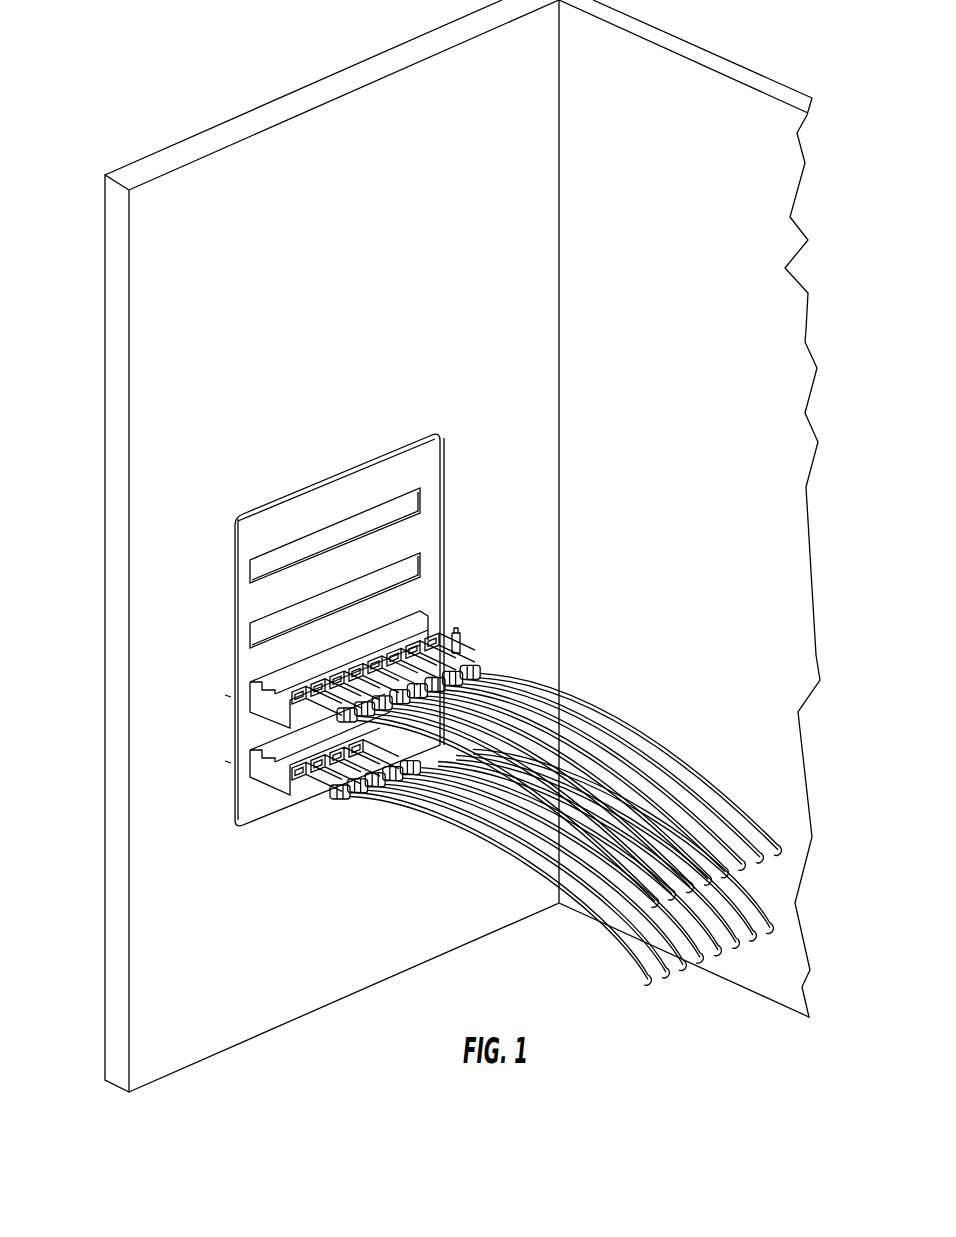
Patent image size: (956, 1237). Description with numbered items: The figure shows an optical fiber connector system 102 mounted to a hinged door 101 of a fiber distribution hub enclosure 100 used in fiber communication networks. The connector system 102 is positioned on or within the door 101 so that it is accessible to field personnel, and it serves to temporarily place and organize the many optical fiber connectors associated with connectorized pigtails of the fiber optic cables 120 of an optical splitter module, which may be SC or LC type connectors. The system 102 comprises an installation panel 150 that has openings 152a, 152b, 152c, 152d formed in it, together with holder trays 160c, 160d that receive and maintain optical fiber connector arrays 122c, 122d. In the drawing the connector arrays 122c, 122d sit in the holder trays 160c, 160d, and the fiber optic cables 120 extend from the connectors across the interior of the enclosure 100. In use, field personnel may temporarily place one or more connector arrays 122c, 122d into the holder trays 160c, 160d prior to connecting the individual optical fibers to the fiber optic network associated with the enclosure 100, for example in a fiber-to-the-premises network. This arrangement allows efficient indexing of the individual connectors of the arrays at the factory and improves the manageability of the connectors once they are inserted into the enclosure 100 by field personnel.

The fiber distribution hub enclosure 100 is at (436, 546).
The hinged door 101 is at (103, 228).
The optical fiber connector system 102 is at (464, 633).
The fiber optic cables 120 is at (568, 702).
The optical fiber connector array 122c is at (433, 637).
The optical fiber connector array 122d is at (305, 775).
The installation panel 150 is at (322, 607).
The opening 152a is at (250, 576).
The opening 152b is at (257, 632).
The opening 152c is at (250, 708).
The opening 152d is at (252, 765).
The holder tray 160c is at (272, 680).
The holder tray 160d is at (272, 748).